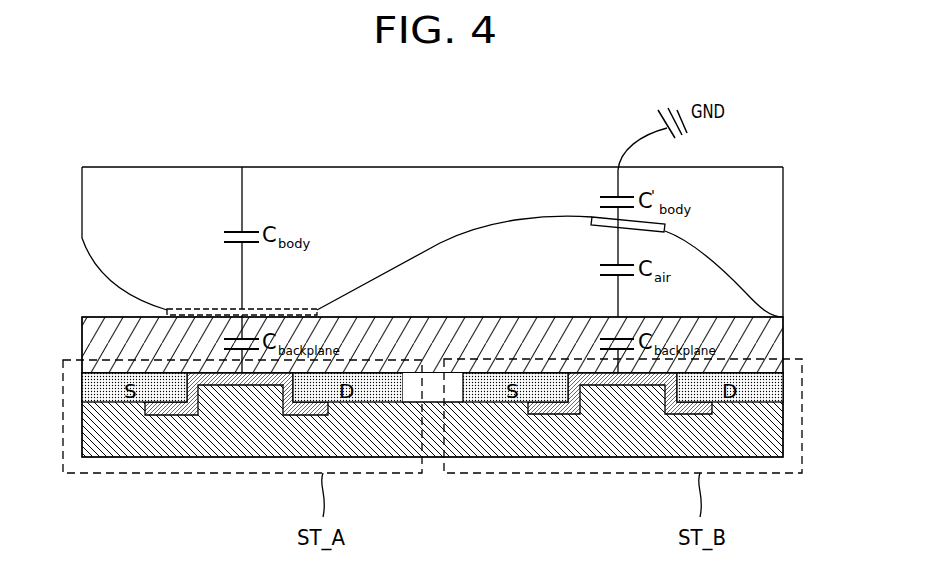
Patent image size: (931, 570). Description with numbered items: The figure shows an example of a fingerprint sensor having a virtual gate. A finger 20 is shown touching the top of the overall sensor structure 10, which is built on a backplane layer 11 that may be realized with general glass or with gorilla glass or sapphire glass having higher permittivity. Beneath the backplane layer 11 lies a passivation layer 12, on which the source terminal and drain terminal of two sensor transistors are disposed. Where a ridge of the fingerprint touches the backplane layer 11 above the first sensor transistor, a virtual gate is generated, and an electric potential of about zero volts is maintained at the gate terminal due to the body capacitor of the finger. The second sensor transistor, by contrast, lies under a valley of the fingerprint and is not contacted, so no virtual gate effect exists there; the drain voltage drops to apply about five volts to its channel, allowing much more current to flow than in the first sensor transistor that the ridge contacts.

The display apparatus 10 is at (749, 76).
The backplane layer 11 is at (108, 351).
The passivation layer 12 is at (108, 439).
The body layer 20 is at (108, 207).